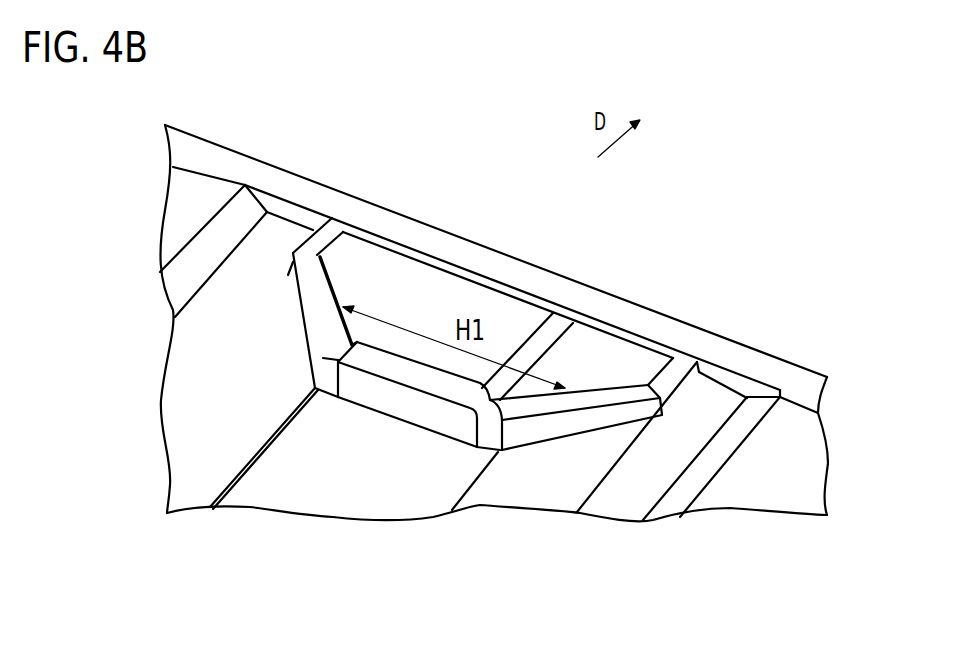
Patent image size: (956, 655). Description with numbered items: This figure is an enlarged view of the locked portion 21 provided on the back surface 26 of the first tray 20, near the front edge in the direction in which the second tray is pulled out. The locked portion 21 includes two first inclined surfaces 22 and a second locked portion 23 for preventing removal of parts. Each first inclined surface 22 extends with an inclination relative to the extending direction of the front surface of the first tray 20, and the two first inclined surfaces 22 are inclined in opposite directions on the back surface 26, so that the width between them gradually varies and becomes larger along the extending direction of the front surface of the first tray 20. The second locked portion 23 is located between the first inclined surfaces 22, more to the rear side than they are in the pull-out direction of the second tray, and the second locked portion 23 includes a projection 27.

The first tray 20 is at (307, 177).
The locked portion 21 is at (573, 278).
The first inclined surface 22 is at (318, 293).
The second locked portion 23 is at (410, 373).
The back surface 26 is at (717, 410).
The projection 27 is at (450, 387).